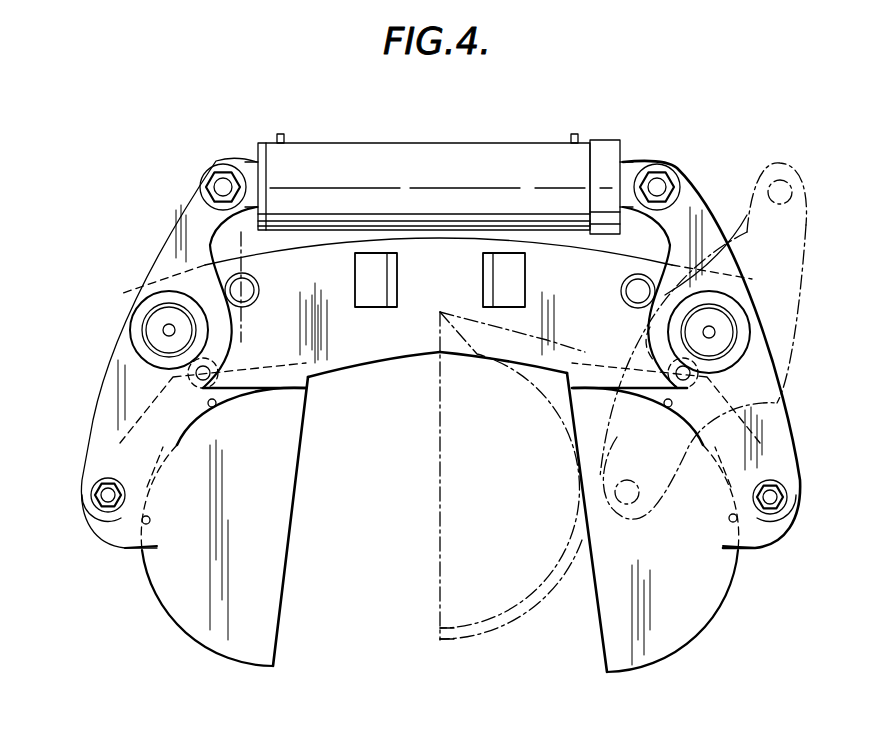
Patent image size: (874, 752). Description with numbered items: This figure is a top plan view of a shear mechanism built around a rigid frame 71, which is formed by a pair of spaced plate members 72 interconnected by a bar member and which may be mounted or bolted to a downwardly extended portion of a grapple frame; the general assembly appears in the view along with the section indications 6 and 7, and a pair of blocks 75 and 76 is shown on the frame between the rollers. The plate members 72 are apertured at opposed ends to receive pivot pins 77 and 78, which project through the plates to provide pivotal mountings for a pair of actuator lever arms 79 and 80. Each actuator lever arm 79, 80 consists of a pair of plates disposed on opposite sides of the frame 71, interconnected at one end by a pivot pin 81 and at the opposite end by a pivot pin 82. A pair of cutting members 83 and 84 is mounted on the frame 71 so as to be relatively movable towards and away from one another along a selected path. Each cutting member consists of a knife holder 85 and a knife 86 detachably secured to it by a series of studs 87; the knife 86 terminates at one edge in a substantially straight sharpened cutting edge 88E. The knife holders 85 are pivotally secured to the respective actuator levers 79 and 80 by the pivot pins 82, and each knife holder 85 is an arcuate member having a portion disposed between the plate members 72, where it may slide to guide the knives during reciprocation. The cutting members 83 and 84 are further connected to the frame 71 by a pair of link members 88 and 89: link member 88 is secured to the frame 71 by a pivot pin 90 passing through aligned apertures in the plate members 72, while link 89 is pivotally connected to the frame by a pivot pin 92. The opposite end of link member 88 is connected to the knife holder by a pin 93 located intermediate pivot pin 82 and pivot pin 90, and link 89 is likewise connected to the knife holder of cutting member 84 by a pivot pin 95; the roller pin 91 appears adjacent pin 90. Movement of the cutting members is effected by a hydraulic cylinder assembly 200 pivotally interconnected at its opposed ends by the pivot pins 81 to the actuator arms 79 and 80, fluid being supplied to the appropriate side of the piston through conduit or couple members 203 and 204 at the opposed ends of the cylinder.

The tool assembly 6 is at (124, 265).
The section line 7- 7 is at (236, 245).
The rigid frame 71 is at (440, 325).
The plate member 72 is at (352, 353).
The block 75 is at (510, 283).
The block 76 is at (390, 283).
The pivot pin 77 is at (720, 333).
The pivot pin 78 is at (157, 322).
The actuator lever arm 79 is at (777, 440).
The actuator lever arm 80 is at (108, 432).
The pivot pin 81 is at (223, 186).
The pivot pin 82 is at (100, 500).
The cutting member 83 is at (688, 606).
The cutting member 84 is at (278, 590).
The knife holder 85 is at (132, 528).
The knife 86 is at (258, 649).
The stud 87 is at (152, 521).
The link member 88 is at (650, 327).
The jaw edge 88E is at (439, 417).
The link member 89 is at (232, 352).
The pivot pin 90 is at (626, 283).
The roller pin 91 is at (626, 297).
The pivot pin 92 is at (256, 290).
The pin 93 is at (694, 375).
The pivot pin 95 is at (185, 377).
The hydraulic cylinder assembly 200 is at (410, 160).
The conduit or couple member 203 is at (572, 135).
The conduit or couple member 204 is at (283, 135).